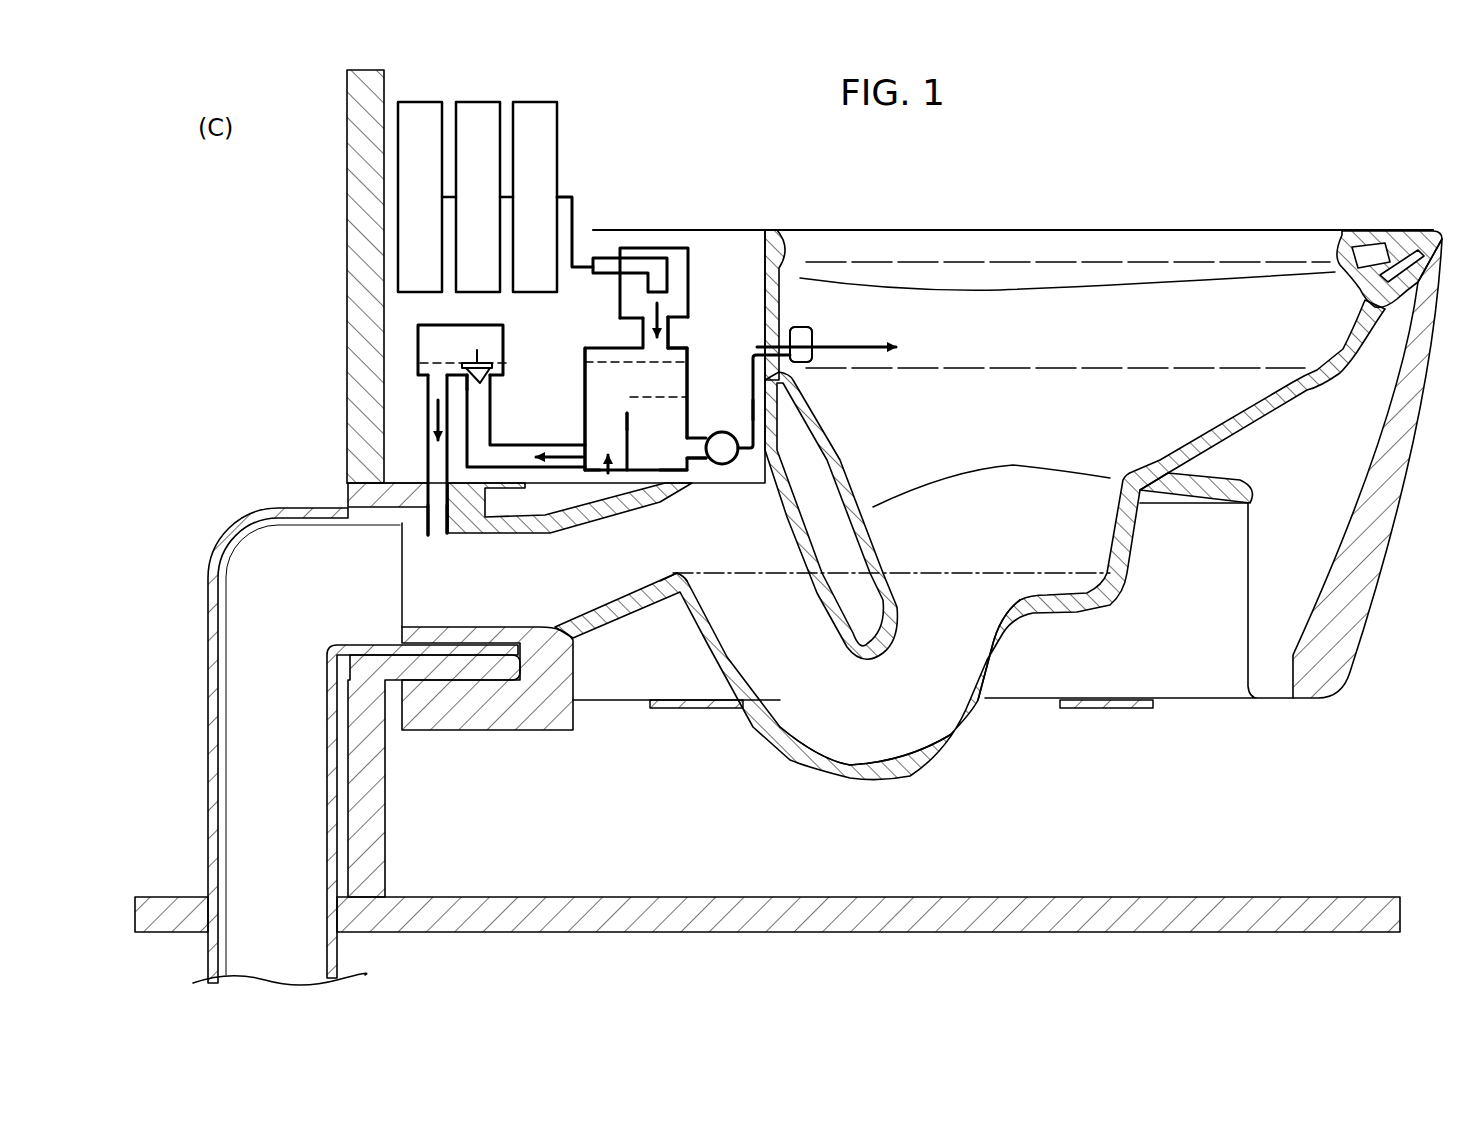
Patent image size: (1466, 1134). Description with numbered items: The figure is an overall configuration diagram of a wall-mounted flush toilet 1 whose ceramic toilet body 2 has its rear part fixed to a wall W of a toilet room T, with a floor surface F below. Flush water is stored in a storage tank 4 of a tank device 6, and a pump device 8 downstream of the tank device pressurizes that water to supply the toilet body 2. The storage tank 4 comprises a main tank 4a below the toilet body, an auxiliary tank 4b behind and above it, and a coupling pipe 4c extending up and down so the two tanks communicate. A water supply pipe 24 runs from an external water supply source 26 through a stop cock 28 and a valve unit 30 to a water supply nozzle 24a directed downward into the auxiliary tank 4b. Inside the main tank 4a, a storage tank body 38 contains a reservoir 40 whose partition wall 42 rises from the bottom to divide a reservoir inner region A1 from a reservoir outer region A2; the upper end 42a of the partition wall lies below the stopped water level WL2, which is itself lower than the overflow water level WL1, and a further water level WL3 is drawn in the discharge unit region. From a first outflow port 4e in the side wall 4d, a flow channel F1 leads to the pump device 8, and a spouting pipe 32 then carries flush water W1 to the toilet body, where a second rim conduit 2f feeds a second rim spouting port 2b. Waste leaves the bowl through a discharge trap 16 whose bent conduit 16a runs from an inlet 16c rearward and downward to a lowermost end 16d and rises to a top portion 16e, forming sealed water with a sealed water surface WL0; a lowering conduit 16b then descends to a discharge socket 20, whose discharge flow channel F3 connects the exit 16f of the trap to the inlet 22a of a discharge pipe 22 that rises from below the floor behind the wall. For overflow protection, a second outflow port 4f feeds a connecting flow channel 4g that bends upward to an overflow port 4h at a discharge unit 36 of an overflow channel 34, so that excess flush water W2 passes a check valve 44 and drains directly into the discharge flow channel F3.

The flush toilet 1 is at (953, 197).
The toilet body 2 is at (1390, 533).
The second rim conduit 2f is at (806, 335).
The second rim spouting port 2b is at (801, 344).
The storage tank 4 is at (807, 160).
The main tank 4a is at (693, 352).
The auxiliary tank 4b is at (693, 269).
The coupling pipe 4c is at (674, 332).
The side wall 4d is at (585, 378).
The first outflow port 4e is at (669, 471).
The second outflow port 4f is at (590, 472).
The connecting flow channel 4g is at (480, 416).
The overflow port 4h is at (486, 384).
The tank device 6 is at (678, 231).
The pump device 8 is at (717, 432).
The discharge trap 16 is at (944, 761).
The bent conduit 16a is at (687, 575).
The lowering conduit 16b is at (520, 640).
The inlet 16c is at (949, 626).
The lowermost end 16d is at (866, 666).
The top portion 16e is at (687, 573).
The exit 16f is at (482, 592).
The discharge socket 20 is at (497, 690).
The discharge pipe 22 is at (206, 688).
The inlet 22a is at (438, 538).
The water supply pipe 24 is at (578, 247).
The water supply nozzle 24a is at (658, 280).
The water supply source 26 is at (436, 102).
The stop cock 28 is at (492, 102).
The valve unit 30 is at (548, 102).
The spouting pipe 32 is at (756, 412).
The overflow channel 34 is at (437, 390).
The discharge unit 36 is at (412, 341).
The storage tank body 38 is at (613, 347).
The reservoir 40 is at (607, 474).
The partition wall 42 is at (640, 471).
The upper end 42a is at (627, 412).
The check valve 44 is at (485, 360).
The wall W is at (344, 124).
The flush water W1 is at (845, 342).
The flush water W2 is at (430, 421).
The sealed water surface WL0 is at (1062, 570).
The overflow water level WL1 is at (597, 356).
The stopped water level WL2 is at (667, 385).
The float chamber water level WL3 is at (443, 362).
The toilet room T is at (639, 110).
The floor surface F is at (1181, 895).
The flow channel F1 is at (700, 471).
The discharge flow channel F3 is at (452, 592).
The reservoir inner region A1 is at (614, 447).
The reservoir outer region A2 is at (662, 447).